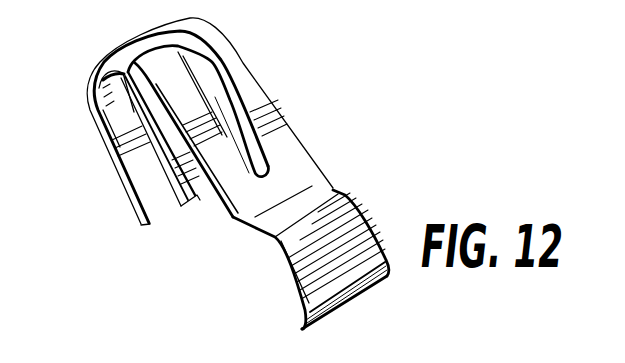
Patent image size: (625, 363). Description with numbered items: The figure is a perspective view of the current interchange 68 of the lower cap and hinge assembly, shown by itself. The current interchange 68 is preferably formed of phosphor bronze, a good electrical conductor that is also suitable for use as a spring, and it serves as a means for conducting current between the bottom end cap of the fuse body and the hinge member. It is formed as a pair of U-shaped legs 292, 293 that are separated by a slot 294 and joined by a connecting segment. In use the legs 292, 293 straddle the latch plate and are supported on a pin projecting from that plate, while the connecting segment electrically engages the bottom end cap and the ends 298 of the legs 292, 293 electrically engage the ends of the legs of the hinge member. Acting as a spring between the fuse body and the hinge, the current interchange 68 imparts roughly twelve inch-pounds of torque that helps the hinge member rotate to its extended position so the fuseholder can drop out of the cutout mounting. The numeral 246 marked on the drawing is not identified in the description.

The current interchange 68 is at (391, 116).
The U-shaped leg 293 is at (210, 43).
The slot 294 is at (229, 119).
The U-shaped leg 292 is at (120, 112).
The ends of legs 298 is at (200, 200).
The bent end portion 246 is at (295, 272).